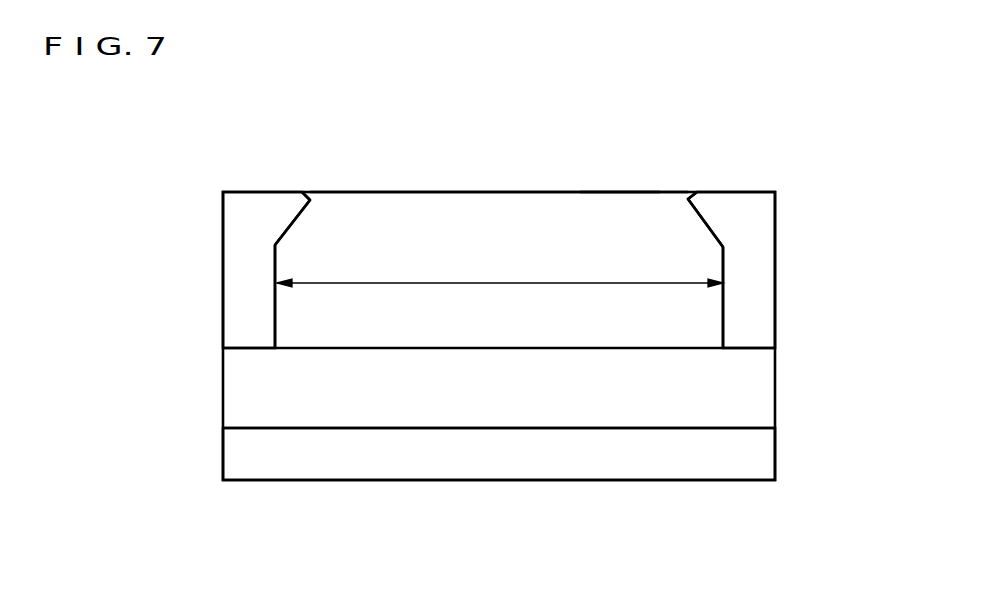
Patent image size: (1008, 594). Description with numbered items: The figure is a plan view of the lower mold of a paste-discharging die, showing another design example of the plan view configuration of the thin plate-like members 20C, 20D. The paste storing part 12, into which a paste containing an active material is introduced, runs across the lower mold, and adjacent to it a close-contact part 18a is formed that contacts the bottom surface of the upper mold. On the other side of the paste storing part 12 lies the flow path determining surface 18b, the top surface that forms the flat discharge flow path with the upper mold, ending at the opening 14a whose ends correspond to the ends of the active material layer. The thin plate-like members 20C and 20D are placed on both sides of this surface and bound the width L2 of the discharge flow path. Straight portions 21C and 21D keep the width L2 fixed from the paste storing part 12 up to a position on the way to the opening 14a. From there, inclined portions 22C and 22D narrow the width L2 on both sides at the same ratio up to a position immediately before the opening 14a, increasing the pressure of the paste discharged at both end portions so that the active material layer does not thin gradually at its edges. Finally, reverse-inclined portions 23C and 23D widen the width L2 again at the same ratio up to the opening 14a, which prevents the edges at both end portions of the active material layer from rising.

The paste storing part 12 is at (757, 383).
The close-contact part 18a is at (755, 448).
The flow path determining surface 18b is at (614, 205).
The opening 14a is at (519, 192).
The thin plate-like member 20C is at (237, 277).
The thin plate-like member 20D is at (765, 273).
The straight portion 21C is at (277, 318).
The straight portion 21D is at (723, 318).
The inclined portion 22C is at (300, 208).
The inclined portion 22D is at (706, 225).
The reverse-inclined portion 23C is at (312, 192).
The reverse-inclined portion 23D is at (688, 192).
The width of the discharge flow path L2 is at (500, 270).